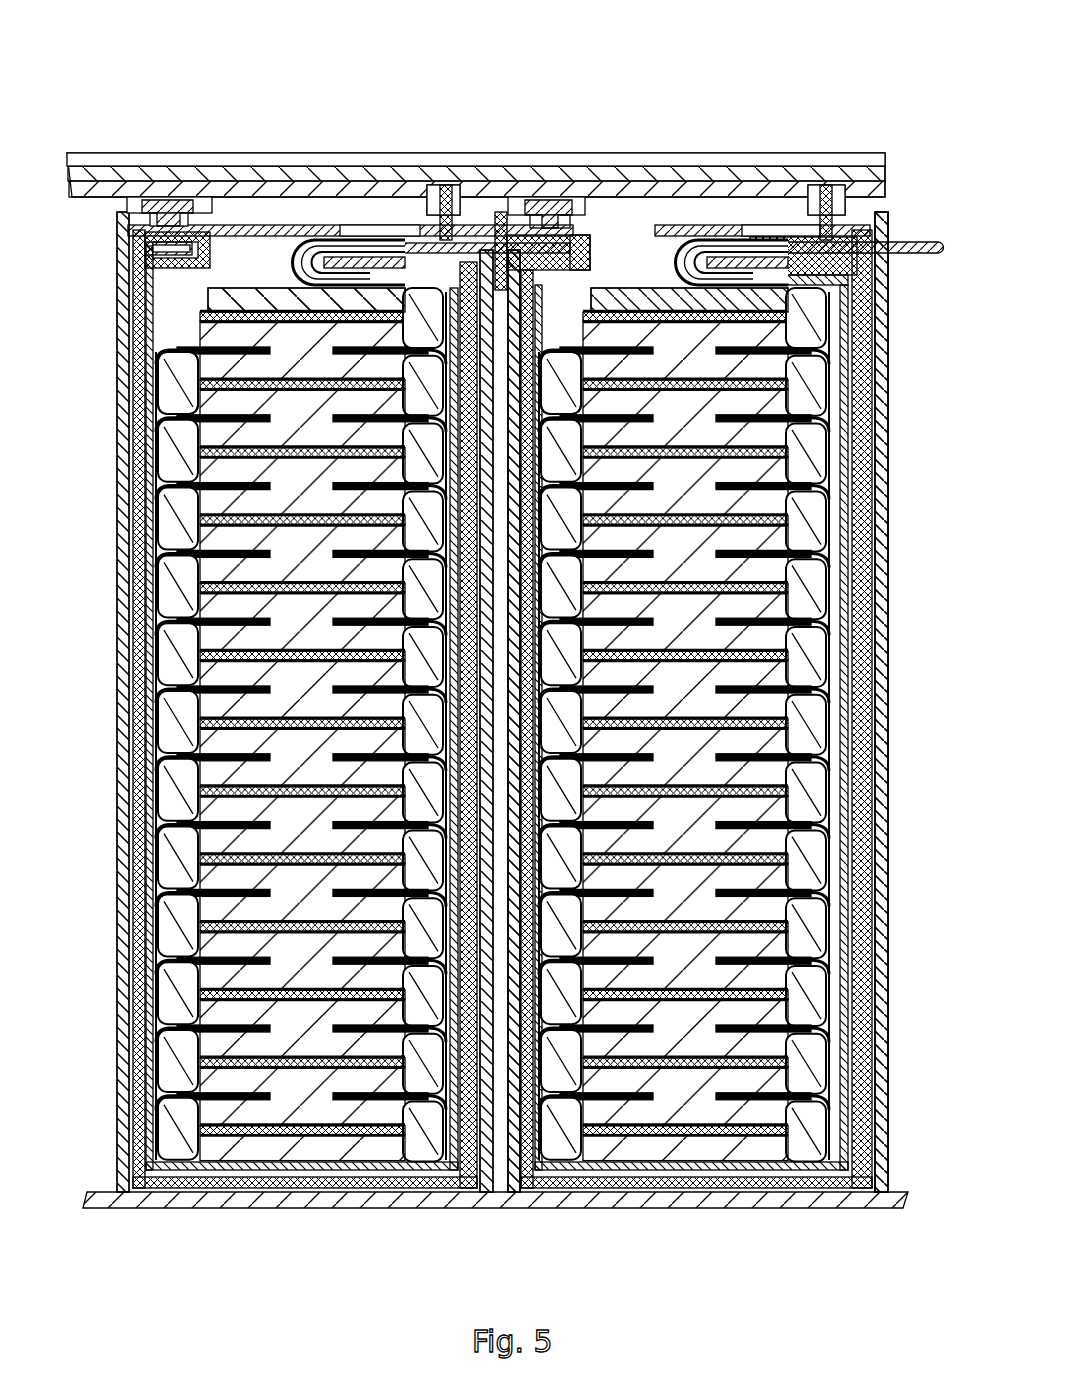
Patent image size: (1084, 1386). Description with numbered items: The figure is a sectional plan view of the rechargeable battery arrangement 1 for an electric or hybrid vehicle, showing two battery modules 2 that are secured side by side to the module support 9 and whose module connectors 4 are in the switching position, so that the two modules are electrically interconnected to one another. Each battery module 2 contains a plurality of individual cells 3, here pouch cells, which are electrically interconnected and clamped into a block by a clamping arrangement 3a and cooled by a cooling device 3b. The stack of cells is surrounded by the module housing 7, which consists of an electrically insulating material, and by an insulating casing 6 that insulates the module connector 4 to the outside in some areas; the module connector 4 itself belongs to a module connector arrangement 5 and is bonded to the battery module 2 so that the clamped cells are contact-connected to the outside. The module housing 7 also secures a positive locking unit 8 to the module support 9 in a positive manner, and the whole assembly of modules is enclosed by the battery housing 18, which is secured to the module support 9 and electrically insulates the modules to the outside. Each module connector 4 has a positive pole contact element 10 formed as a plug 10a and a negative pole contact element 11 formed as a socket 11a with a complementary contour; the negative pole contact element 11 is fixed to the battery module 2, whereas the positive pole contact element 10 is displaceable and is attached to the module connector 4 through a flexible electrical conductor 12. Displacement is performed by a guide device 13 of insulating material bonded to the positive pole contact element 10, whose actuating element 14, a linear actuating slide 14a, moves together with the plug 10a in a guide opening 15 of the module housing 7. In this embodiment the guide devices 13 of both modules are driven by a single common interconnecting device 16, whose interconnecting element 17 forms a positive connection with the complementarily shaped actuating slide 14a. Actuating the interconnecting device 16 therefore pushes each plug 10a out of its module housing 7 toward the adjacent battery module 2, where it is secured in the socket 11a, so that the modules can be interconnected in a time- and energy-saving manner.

The rechargeable battery arrangement 1 is at (506, 649).
The battery module 2 is at (314, 1192).
The individual cells 3 is at (293, 361).
The clamping arrangement 3a is at (198, 298).
The cooling device 3b is at (152, 355).
The module connector 4 is at (150, 415).
The module connector arrangement 5 is at (898, 222).
The insulating casing 6 is at (124, 505).
The module housing 7 is at (138, 465).
The positive locking unit 8 is at (165, 198).
The module support 9 is at (92, 160).
The positive pole contact element 10 is at (540, 240).
The plug 10a is at (520, 248).
The negative pole contact element 11 is at (132, 246).
The socket 11a is at (150, 258).
The flexible electrical conductor 12 is at (300, 240).
The guide device 13 is at (458, 238).
The actuating element 14 is at (447, 198).
The linear actuating slide 14a is at (659, 137).
The guide opening 15 is at (375, 222).
The interconnecting device 16 is at (258, 158).
The interconnecting element 17 is at (402, 224).
The battery housing 18 is at (527, 1208).